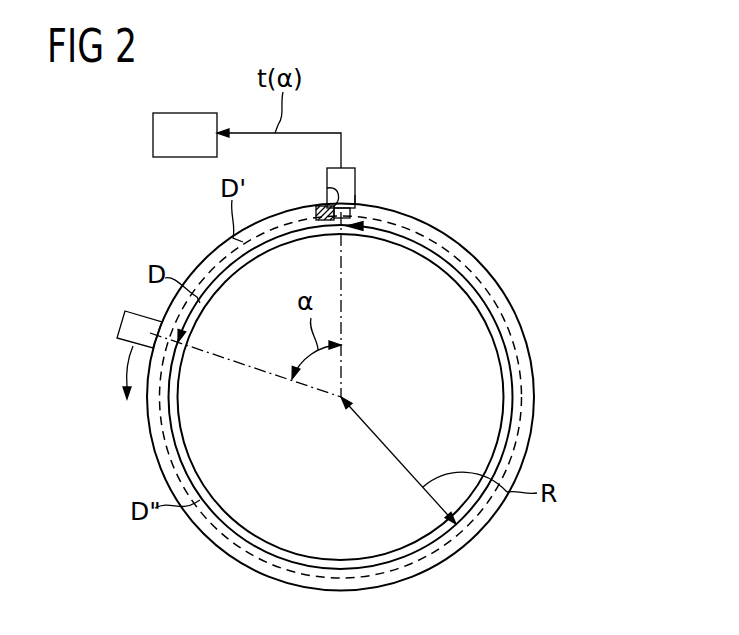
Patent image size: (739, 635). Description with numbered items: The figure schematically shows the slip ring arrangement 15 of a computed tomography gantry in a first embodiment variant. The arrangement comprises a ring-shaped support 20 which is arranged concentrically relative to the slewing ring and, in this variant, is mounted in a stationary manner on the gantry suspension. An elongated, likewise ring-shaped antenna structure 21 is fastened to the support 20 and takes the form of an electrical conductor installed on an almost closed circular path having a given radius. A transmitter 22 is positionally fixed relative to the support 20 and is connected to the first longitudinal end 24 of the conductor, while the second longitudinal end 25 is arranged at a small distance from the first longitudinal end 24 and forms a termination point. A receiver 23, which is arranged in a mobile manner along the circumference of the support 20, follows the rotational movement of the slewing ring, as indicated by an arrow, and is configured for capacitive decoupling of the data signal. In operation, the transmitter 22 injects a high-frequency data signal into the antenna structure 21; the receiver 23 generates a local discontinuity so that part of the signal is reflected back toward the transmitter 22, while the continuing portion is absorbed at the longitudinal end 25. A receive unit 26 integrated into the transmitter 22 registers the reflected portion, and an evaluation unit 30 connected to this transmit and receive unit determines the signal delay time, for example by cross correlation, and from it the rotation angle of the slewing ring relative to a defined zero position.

The slip ring arrangement 15 is at (565, 250).
The ring-shaped support 20 is at (535, 368).
The antenna structure 21 is at (520, 428).
The transmitter 22 is at (373, 154).
The receiver 23 is at (120, 322).
The first longitudinal end 24 is at (322, 208).
The second longitudinal end 25 is at (357, 200).
The receive unit 26 is at (358, 178).
The evaluation unit 30 is at (185, 113).